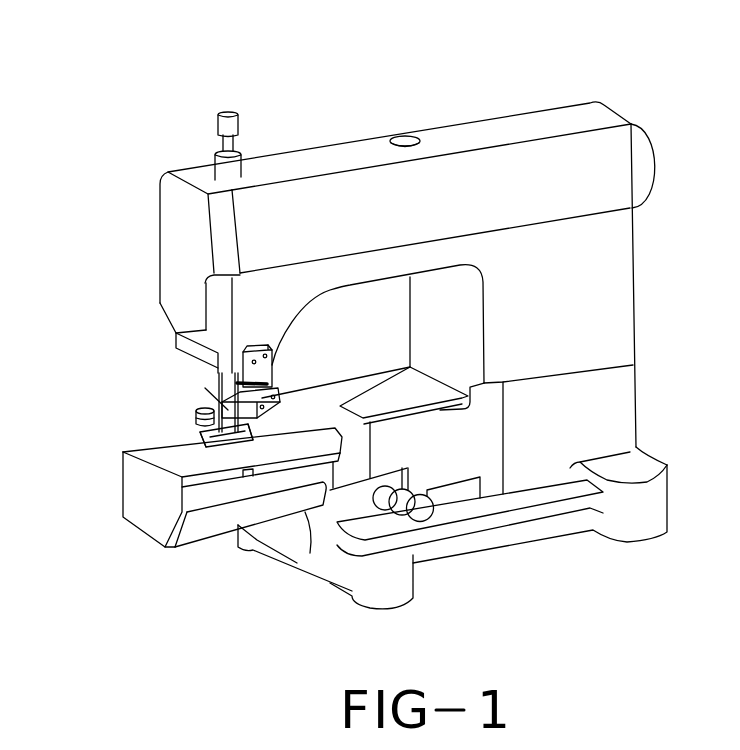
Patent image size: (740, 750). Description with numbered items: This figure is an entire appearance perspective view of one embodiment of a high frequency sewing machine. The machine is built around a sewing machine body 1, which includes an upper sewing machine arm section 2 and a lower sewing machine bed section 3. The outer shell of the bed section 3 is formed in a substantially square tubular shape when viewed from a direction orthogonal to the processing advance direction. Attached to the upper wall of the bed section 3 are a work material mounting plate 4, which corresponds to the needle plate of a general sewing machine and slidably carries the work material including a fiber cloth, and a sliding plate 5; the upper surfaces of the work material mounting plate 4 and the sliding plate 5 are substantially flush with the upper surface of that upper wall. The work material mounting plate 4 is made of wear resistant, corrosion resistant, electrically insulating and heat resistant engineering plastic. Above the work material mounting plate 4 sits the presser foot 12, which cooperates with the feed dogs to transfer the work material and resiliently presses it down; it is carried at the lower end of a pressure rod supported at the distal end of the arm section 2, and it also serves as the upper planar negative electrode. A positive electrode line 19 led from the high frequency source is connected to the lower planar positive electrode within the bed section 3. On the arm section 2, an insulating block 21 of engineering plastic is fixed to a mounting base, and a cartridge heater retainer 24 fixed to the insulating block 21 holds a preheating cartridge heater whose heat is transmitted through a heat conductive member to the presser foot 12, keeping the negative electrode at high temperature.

The sewing machine body 1 is at (355, 315).
The sewing machine arm section 2 is at (407, 298).
The sewing machine bed section 3 is at (200, 520).
The work material mounting plate 4 is at (245, 443).
The sliding plate 5 is at (173, 460).
The presser foot 12 is at (232, 440).
The positive electrode line 19 is at (272, 388).
The insulating block 21 is at (275, 402).
The cartridge heater retainer 24 is at (220, 420).